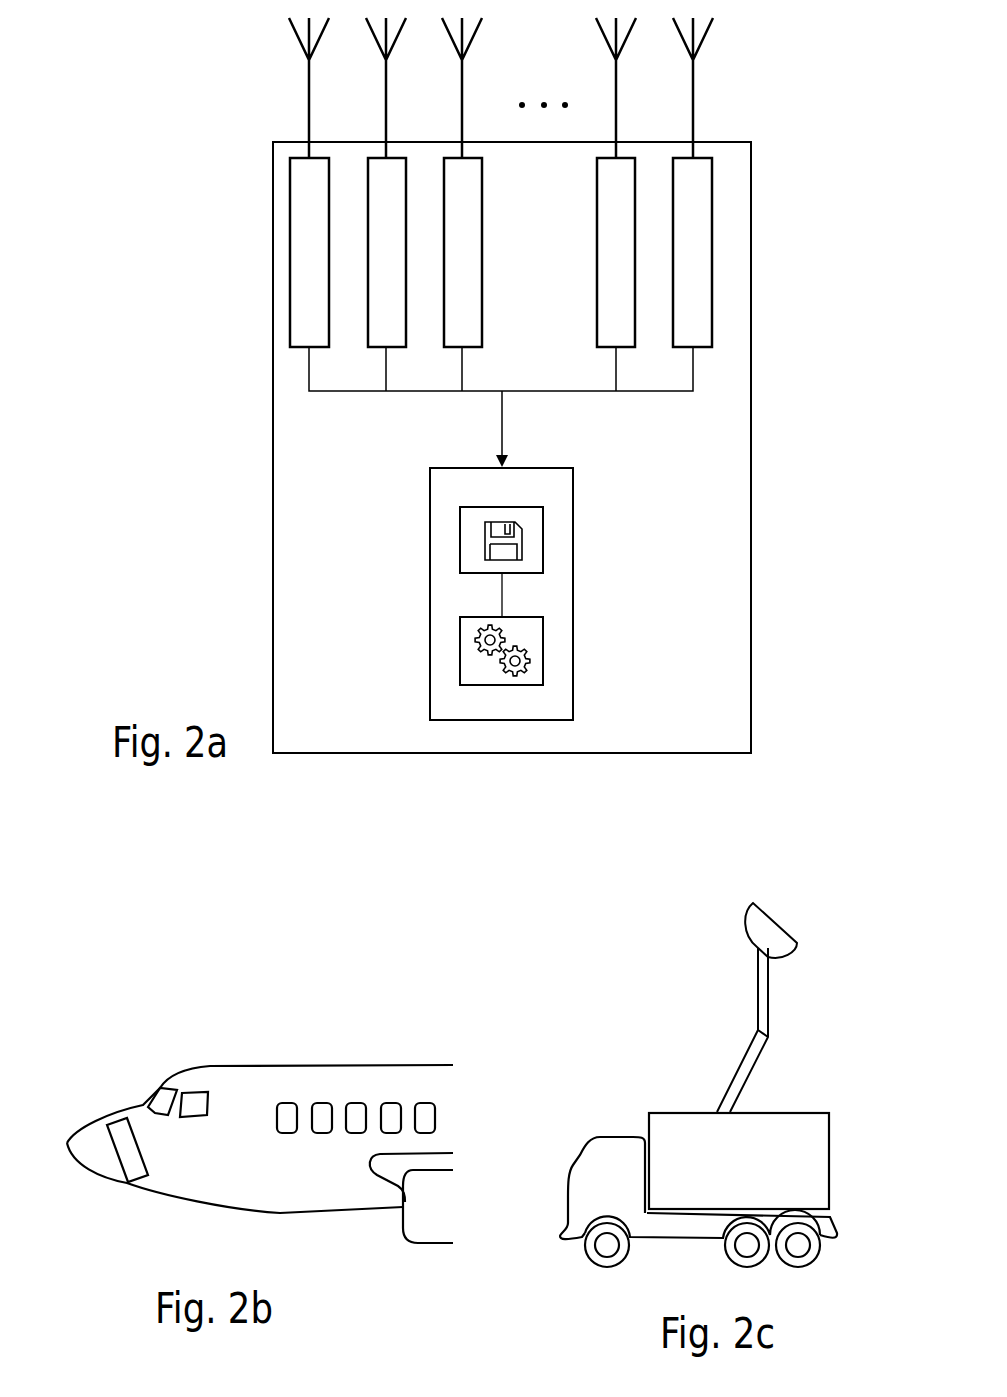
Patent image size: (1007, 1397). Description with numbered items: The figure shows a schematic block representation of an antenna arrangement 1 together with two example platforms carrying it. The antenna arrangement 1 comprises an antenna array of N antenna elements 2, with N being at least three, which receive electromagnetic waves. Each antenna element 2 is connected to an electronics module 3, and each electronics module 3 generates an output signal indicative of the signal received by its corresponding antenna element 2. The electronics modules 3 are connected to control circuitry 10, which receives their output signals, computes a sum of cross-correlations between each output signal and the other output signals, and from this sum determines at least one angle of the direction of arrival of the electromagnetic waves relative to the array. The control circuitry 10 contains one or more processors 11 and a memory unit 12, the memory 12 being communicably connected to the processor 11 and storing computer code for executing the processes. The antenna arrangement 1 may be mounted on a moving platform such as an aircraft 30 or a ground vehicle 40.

In FIG. 2A, the antenna arrangement 1 is at (809, 687).
In FIG. 2B, the antenna arrangement 1 is at (137, 1106).
In FIG. 2C, the antenna arrangement 1 is at (782, 940).
In FIG. 2A, the antenna element 2 is at (309, 83).
In FIG. 2A, the electronics module 3 is at (290, 168).
In FIG. 2A, the control circuitry 10 is at (430, 600).
In FIG. 2A, the processor 11 is at (543, 646).
In FIG. 2A, the memory unit 12 is at (543, 536).
In FIG. 2B, the aircraft 30 is at (333, 1047).
In FIG. 2C, the ground vehicle 40 is at (835, 1088).